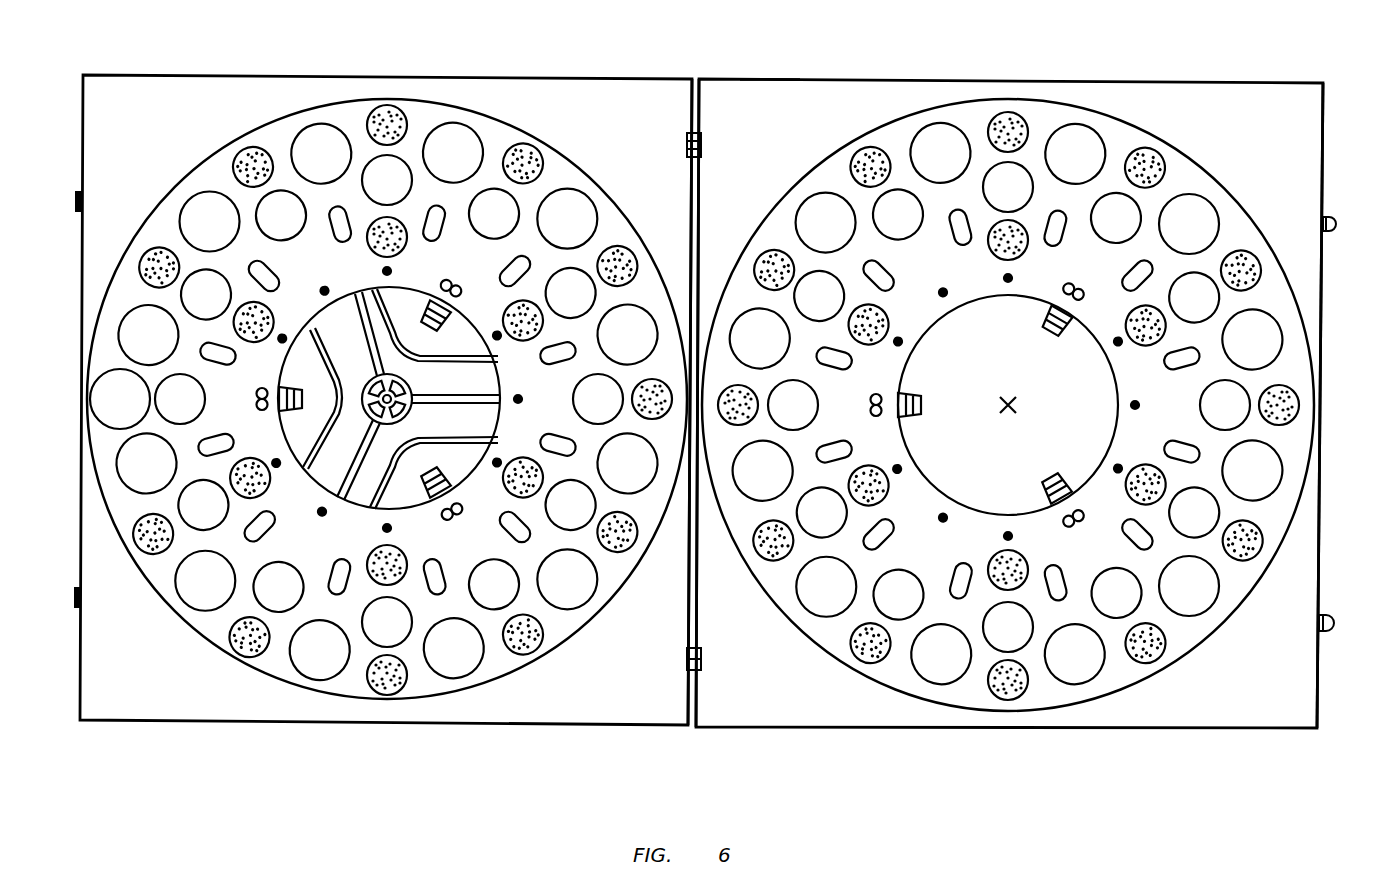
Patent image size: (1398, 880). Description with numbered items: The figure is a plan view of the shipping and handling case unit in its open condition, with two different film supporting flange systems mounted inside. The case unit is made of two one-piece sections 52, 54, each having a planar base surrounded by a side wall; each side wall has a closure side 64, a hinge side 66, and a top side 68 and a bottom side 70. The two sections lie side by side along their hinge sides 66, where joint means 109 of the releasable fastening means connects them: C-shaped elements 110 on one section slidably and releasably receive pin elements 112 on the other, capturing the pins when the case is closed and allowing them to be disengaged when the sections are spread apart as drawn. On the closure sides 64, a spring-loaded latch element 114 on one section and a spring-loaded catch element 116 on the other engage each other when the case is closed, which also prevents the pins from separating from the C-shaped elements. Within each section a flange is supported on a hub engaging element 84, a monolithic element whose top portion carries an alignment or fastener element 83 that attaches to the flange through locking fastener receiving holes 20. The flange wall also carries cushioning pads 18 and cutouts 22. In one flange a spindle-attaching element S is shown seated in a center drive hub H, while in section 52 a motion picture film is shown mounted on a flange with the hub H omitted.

The pads 18 is at (1008, 702).
The locking fastener receiving hole 20 is at (1068, 529).
The cutout 22 is at (1081, 690).
The case unit section 52 is at (771, 729).
The case unit section 54 is at (159, 75).
The closure side 64 is at (1317, 578).
The hinge side 66 is at (688, 573).
The top side 68 is at (768, 81).
The bottom side 70 is at (387, 441).
The alignment or fastener element 83 is at (457, 520).
The hub engaging element 84 is at (1049, 336).
The joint means 109 is at (686, 129).
The C-shaped element 110 is at (700, 648).
The pin element 112 is at (700, 657).
The latch element 114 is at (1334, 630).
The catch element 116 is at (76, 606).
The spindle-attaching element S is at (392, 376).
The center drive hub H is at (407, 476).